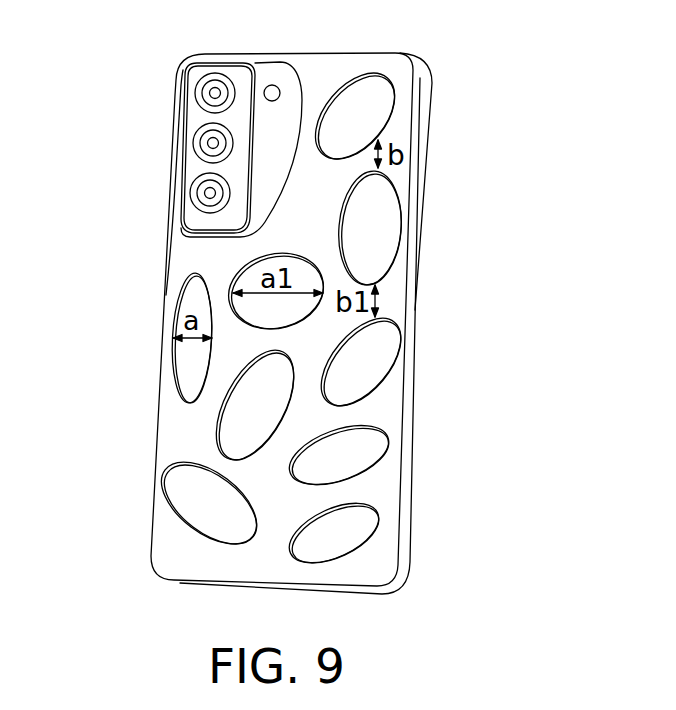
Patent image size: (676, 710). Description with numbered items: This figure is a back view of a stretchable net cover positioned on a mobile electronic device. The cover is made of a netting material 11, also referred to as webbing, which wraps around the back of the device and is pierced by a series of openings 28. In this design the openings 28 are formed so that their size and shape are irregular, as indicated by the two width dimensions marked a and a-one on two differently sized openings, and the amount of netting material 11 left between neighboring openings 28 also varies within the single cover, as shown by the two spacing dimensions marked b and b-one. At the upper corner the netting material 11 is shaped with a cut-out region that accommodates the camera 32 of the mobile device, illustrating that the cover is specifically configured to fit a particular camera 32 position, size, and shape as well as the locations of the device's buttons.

The netting material 11 is at (177, 437).
The openings 28 is at (383, 220).
The camera 32 is at (193, 173).